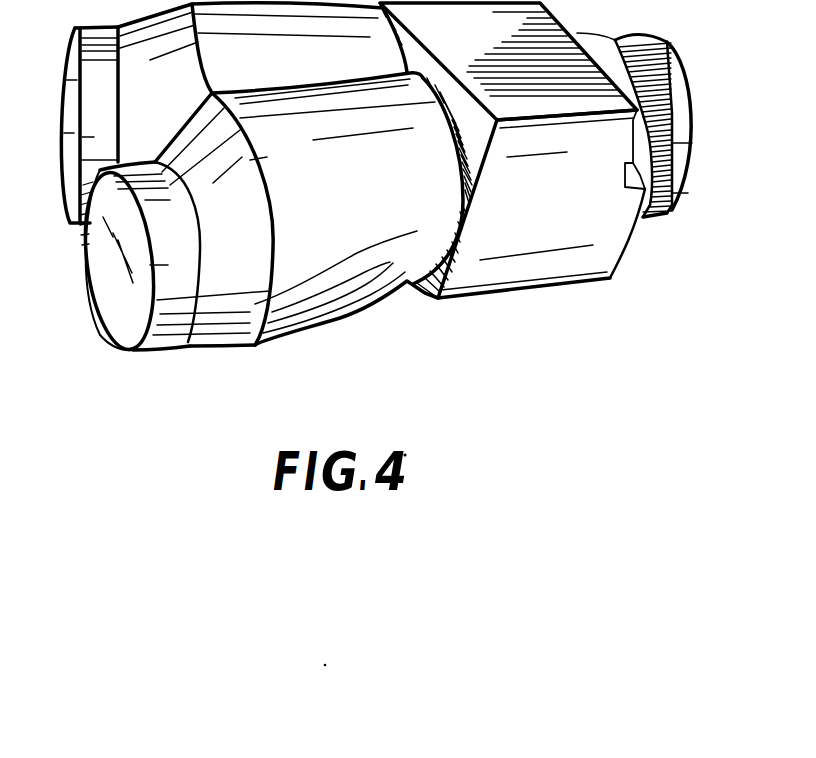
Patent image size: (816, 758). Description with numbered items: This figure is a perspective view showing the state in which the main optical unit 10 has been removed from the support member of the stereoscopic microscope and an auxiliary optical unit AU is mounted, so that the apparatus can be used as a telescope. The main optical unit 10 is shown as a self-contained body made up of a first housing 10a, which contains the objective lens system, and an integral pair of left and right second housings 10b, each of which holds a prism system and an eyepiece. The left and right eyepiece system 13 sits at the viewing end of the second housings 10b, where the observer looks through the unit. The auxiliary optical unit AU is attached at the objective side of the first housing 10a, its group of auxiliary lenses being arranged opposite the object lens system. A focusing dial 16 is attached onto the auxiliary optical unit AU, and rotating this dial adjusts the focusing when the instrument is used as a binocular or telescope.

The main optical unit 10 is at (410, 289).
The first housing 10a is at (535, 263).
The second housings 10b is at (297, 293).
The eyepiece system 13 is at (120, 293).
The focusing dial 16 is at (655, 216).
The auxiliary optical unit AU is at (685, 163).